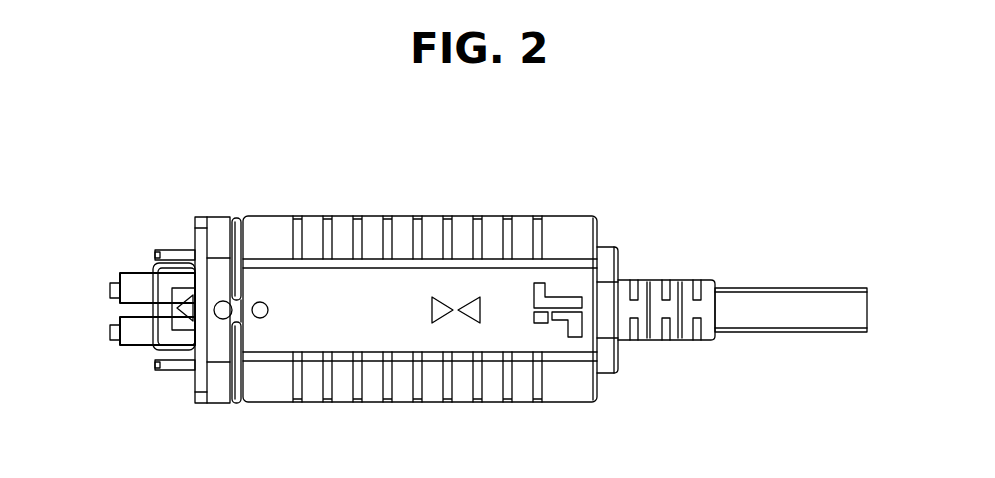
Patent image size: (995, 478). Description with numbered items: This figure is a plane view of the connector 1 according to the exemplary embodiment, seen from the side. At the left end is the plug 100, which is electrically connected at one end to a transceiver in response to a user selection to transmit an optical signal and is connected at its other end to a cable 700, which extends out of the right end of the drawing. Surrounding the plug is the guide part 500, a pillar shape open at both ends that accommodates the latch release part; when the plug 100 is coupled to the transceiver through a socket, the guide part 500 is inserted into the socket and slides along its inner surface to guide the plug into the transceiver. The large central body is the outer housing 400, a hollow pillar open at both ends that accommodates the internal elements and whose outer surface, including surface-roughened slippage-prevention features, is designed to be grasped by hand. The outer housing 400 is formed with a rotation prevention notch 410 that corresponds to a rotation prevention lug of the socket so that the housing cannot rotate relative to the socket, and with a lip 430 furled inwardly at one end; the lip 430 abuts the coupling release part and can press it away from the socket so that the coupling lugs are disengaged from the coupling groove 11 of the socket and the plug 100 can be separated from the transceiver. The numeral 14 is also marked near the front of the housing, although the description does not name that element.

The connector 1 is at (364, 189).
The coupling groove 11 is at (203, 219).
The seal 14 is at (235, 320).
The plug 100 is at (130, 287).
The outer housing 400 is at (573, 217).
The rotation prevention notch 410 is at (232, 305).
The lip 430 is at (234, 218).
The guide part 500 is at (163, 366).
The cable 700 is at (793, 293).